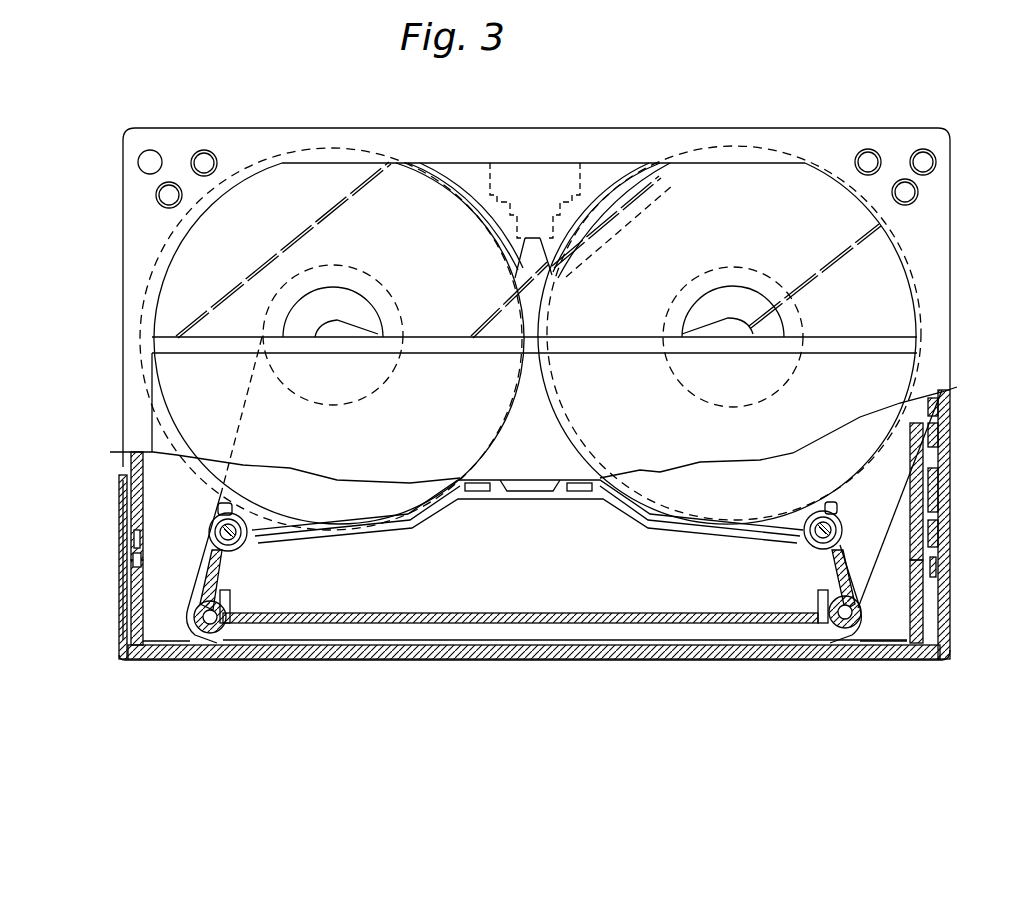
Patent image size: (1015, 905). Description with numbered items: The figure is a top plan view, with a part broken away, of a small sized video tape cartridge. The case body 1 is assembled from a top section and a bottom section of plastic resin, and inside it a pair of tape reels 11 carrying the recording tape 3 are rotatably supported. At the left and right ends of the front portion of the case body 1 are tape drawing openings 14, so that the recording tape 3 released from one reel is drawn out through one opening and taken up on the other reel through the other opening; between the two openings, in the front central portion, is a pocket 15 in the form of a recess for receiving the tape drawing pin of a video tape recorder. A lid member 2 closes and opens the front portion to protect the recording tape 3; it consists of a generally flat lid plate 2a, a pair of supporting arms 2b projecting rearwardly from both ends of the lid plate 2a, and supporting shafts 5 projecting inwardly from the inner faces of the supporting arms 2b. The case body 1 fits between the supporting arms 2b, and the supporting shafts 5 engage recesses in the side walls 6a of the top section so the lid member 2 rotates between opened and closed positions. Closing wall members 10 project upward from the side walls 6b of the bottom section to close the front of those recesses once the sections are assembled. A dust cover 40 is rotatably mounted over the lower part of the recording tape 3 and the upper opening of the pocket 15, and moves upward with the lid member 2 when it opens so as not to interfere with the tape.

The case body 1 is at (808, 128).
The lid member 2 is at (466, 663).
The lid plate 2a is at (665, 657).
The supporting arms 2b is at (118, 583).
The recording tape 3 is at (388, 642).
The supporting shafts 5 is at (143, 538).
The side walls of the top section 6a is at (142, 493).
The side walls of the bottom section 6b is at (119, 630).
The closing wall members 10 is at (142, 553).
The tape reels 11 is at (217, 477).
The tape drawing openings 14 is at (178, 638).
The pocket 15 is at (561, 598).
The dust cover 40 is at (449, 612).